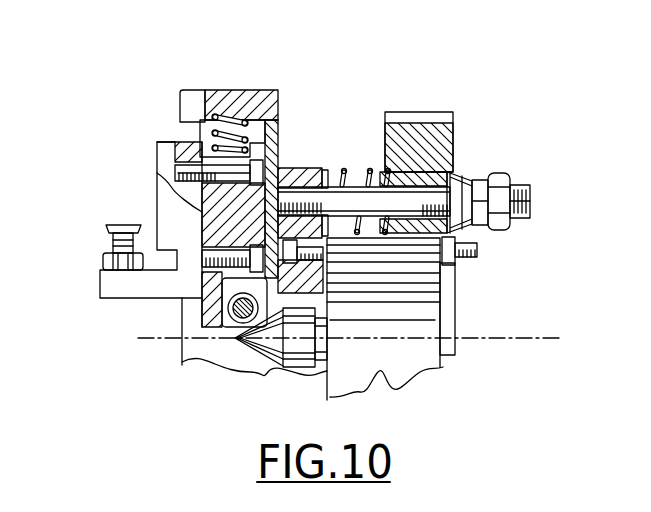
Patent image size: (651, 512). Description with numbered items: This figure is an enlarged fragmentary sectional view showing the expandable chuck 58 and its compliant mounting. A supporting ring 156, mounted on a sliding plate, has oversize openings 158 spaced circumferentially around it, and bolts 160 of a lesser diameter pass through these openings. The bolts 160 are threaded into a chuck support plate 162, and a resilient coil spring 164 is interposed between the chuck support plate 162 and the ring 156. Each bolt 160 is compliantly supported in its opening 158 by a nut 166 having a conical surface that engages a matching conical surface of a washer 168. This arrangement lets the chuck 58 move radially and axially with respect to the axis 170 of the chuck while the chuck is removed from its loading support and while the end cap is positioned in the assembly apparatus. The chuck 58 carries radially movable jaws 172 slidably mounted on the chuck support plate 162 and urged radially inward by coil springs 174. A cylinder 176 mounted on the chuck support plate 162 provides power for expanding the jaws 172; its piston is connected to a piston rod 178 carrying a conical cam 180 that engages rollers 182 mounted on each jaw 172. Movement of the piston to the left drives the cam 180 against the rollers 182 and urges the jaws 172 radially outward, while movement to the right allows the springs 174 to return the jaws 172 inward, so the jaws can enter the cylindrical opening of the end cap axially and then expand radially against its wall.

The chuck 58 is at (270, 76).
The supporting ring 156 is at (427, 127).
The oversize openings 158 is at (495, 178).
The bolts 160 is at (393, 197).
The chuck support plate 162 is at (295, 177).
The coil spring 164 is at (347, 175).
The nut 166 is at (502, 178).
The washer 168 is at (458, 170).
The axis 170 is at (520, 338).
The jaws 172 is at (115, 283).
The coil springs 174 is at (206, 117).
The cylinder 176 is at (430, 303).
The piston rod 178 is at (377, 373).
The conical cam 180 is at (270, 347).
The rollers 182 is at (228, 308).